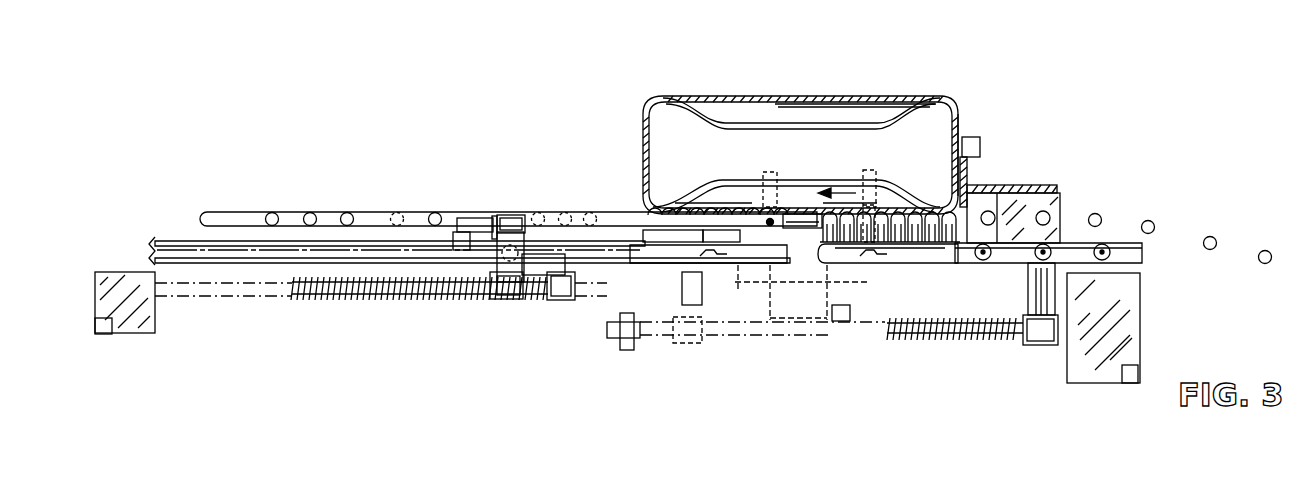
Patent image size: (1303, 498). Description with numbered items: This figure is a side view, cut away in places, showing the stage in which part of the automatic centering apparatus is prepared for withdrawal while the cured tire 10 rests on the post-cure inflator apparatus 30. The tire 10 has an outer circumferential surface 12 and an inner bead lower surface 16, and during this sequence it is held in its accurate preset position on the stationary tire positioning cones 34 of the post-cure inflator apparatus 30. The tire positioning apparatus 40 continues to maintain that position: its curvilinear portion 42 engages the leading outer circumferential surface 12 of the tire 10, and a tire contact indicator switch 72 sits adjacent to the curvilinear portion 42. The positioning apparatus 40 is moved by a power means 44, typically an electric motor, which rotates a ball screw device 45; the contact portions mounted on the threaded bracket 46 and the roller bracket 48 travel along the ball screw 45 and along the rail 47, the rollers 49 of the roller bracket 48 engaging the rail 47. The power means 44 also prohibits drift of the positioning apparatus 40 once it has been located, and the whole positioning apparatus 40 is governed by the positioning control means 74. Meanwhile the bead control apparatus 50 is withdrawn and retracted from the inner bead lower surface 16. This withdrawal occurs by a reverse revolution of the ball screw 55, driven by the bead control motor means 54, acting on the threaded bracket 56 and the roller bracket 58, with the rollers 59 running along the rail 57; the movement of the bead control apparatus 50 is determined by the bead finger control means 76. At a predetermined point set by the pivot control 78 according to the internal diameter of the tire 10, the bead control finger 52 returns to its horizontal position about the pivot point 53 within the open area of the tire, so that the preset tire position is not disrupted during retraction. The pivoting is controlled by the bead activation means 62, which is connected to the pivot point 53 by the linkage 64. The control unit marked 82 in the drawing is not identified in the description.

The cured tire 10 is at (680, 141).
The outer circumferential surface 12 is at (957, 128).
The inner bead lower surface 16 is at (729, 207).
The post-cure inflator apparatus 30 is at (846, 333).
The stationary tire positioning cones 34 is at (744, 207).
The tire positioning apparatus 40 is at (1052, 166).
The curvilinear portion 42 is at (975, 177).
The power means 44 is at (1080, 375).
The ball screw device 45 is at (933, 338).
The threaded bracket 46 is at (1032, 346).
The rail 47 is at (896, 258).
The roller bracket 48 is at (1030, 312).
The rollers 49 is at (975, 262).
The bead control apparatus 50 is at (588, 206).
The bead control finger 52 is at (816, 212).
The pivot point 53 is at (768, 227).
The bead control motor means 54 is at (148, 325).
The ball screw 55 is at (350, 298).
The threaded bracket 56 is at (555, 295).
The rail 57 is at (420, 255).
The roller bracket 58 is at (508, 282).
The rollers 59 is at (515, 252).
The bead activation means 62 is at (480, 216).
The linkage 64 is at (633, 213).
The tire contact indicator switch 72 is at (968, 180).
The positioning control means 74 is at (1125, 381).
The bead finger control means 76 is at (103, 335).
The pivot control 78 is at (455, 228).
The control C 82 is at (833, 320).